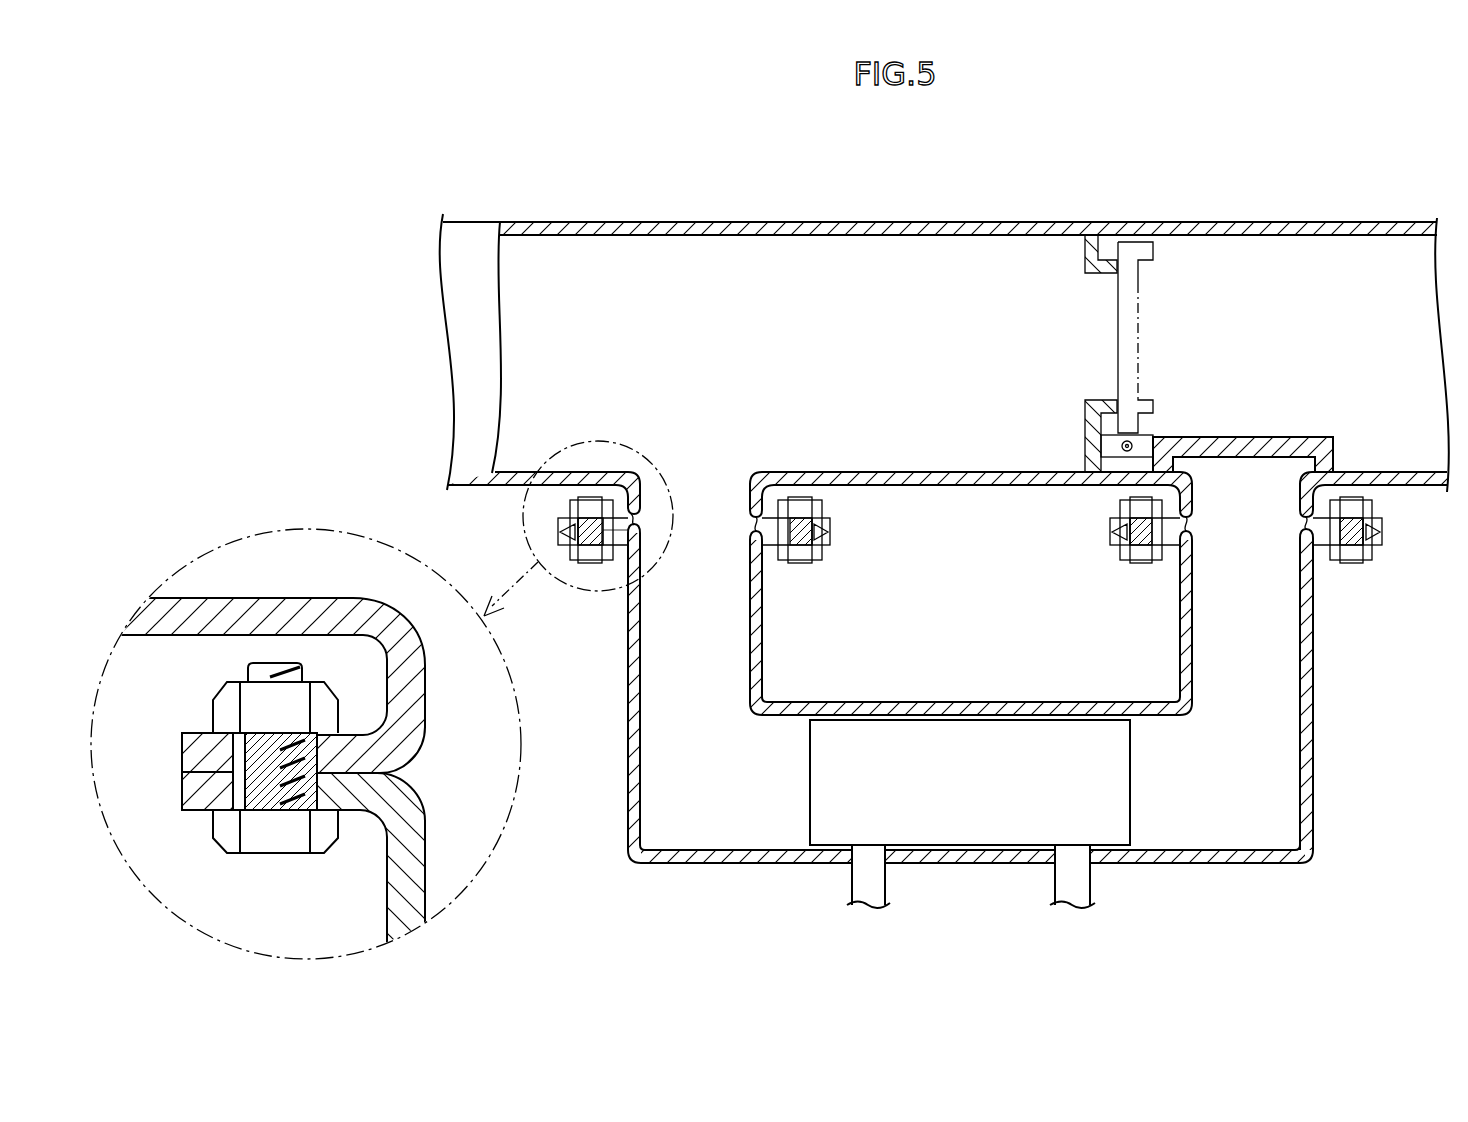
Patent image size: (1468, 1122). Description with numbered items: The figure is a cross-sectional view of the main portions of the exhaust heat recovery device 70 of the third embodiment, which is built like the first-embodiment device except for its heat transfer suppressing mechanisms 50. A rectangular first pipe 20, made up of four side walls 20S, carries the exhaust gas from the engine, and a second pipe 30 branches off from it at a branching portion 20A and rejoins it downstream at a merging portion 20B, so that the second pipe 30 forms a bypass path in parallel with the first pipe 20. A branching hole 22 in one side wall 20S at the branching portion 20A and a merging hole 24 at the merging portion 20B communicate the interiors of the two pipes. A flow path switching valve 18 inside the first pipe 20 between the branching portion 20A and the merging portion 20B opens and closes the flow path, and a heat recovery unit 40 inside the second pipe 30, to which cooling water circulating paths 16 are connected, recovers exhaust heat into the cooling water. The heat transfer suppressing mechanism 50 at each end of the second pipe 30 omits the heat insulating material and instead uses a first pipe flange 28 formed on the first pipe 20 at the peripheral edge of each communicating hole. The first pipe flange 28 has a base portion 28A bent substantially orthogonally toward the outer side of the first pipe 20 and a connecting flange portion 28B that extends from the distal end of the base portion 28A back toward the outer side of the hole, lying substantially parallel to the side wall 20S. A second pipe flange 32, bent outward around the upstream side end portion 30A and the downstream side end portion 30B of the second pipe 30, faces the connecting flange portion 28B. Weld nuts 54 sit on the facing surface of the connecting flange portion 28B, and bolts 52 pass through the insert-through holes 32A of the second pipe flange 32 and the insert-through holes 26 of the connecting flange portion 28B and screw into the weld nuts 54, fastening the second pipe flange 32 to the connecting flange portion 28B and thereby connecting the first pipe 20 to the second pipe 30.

The cooling water circulating path 16 is at (885, 882).
The flow path switching valve 18 is at (1118, 318).
The first pipe 20 is at (1020, 221).
The branching portion 20A is at (623, 302).
The merging portion 20B is at (1290, 320).
The side wall 20S is at (1329, 262).
The branching hole 22 is at (748, 481).
The merging hole 24 is at (1298, 490).
The insert-through hole 26 is at (293, 738).
The first pipe flange 28 is at (558, 516).
The base portion 28A is at (428, 715).
The connecting flange portion 28B is at (193, 732).
The second pipe 30 is at (729, 863).
The upstream side end portion 30A is at (750, 570).
The downstream side end portion 30B is at (1300, 570).
The second pipe flange 32 is at (560, 533).
The insert-through hole 32A is at (308, 812).
The heat recovery unit 40 is at (1130, 780).
The heat transfer suppressing mechanism 50 is at (544, 517).
The bolt 52 is at (592, 563).
The weld nut 54 is at (607, 500).
The exhaust heat recovery device 70 is at (1197, 181).